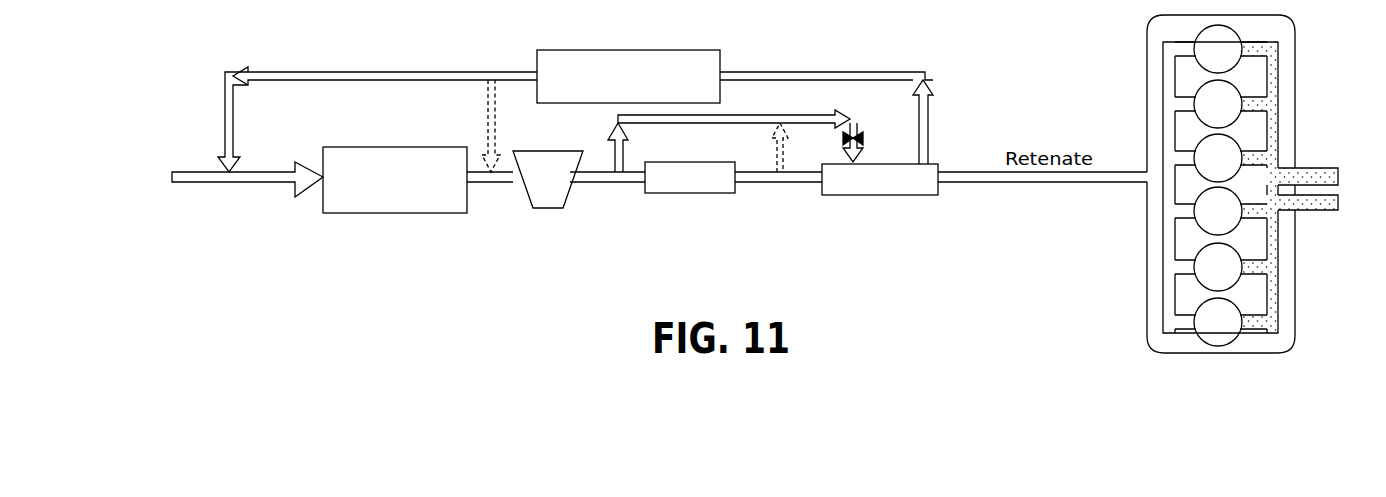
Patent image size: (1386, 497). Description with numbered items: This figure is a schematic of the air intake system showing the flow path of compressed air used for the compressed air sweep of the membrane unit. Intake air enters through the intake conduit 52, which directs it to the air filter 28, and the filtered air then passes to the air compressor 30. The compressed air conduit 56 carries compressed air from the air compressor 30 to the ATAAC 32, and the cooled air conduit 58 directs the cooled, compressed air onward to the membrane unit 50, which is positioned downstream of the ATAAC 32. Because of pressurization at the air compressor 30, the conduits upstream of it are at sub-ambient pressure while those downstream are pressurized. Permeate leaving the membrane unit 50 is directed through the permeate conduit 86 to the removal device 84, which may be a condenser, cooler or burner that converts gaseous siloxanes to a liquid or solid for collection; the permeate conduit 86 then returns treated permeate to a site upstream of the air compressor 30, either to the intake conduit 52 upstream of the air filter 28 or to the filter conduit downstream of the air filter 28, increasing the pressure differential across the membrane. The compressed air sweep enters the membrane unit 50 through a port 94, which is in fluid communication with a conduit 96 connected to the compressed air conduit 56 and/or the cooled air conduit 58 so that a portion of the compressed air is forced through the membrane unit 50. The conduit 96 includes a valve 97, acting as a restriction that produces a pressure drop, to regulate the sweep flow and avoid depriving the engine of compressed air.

The air filter 28 is at (415, 147).
The air compressor 30 is at (550, 151).
The ATAAC 32 is at (692, 162).
The membrane unit 50 is at (882, 195).
The intake conduit 52 is at (277, 185).
The compressed air conduit 56 is at (602, 185).
The cooled air conduit 58 is at (773, 185).
The removal device 84 is at (585, 50).
The permeate conduit 86 is at (314, 72).
The port 94 is at (863, 139).
The conduit 96 is at (738, 115).
The valve 97 is at (860, 160).